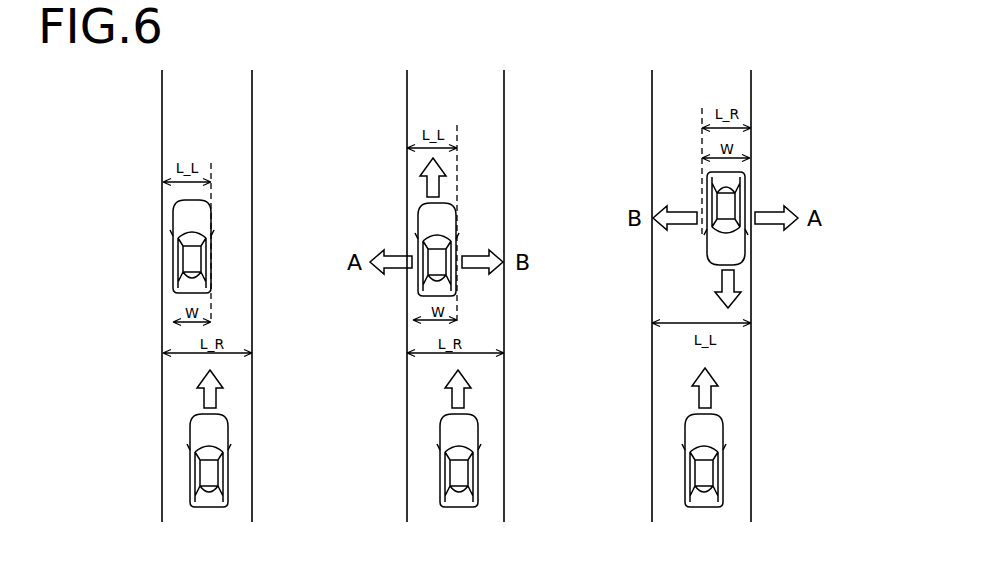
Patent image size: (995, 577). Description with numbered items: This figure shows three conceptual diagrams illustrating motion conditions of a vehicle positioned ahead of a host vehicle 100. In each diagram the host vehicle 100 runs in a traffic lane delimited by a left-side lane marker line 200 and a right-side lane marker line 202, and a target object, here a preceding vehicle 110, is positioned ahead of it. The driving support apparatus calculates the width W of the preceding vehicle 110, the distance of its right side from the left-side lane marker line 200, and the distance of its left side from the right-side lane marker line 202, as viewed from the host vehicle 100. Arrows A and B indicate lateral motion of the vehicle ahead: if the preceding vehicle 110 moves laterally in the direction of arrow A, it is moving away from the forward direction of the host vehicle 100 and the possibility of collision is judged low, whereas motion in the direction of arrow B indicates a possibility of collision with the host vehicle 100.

The host vehicle 100 is at (230, 467).
The preceding vehicle 110 is at (170, 222).
The left-side lane marker line 200 is at (162, 393).
The right-side lane marker line 202 is at (253, 322).